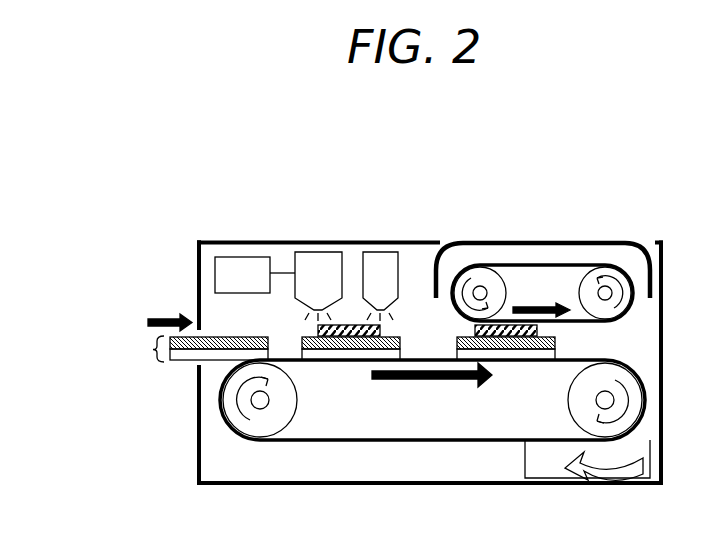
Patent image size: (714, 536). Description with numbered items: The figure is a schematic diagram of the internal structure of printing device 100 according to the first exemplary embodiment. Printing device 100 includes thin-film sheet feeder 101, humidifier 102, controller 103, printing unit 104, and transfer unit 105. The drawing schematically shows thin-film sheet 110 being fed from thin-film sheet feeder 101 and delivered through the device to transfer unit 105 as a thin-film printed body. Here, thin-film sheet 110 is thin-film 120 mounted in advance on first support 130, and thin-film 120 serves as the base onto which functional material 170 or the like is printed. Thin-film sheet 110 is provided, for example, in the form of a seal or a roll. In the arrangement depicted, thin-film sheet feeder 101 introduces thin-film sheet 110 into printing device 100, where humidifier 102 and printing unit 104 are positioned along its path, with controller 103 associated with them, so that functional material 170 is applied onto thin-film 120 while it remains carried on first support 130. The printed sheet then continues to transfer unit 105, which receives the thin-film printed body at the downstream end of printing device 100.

The printing device 100 is at (496, 133).
The thin-film sheet feeder 101 is at (194, 365).
The humidifier 102 is at (382, 251).
The controller 103 is at (240, 257).
The printing unit 104 is at (316, 251).
The transfer unit 105 is at (577, 262).
The thin-film sheet 110 is at (152, 349).
The thin-film 120 is at (225, 337).
The first support 130 is at (230, 355).
The functional material 170 is at (353, 325).